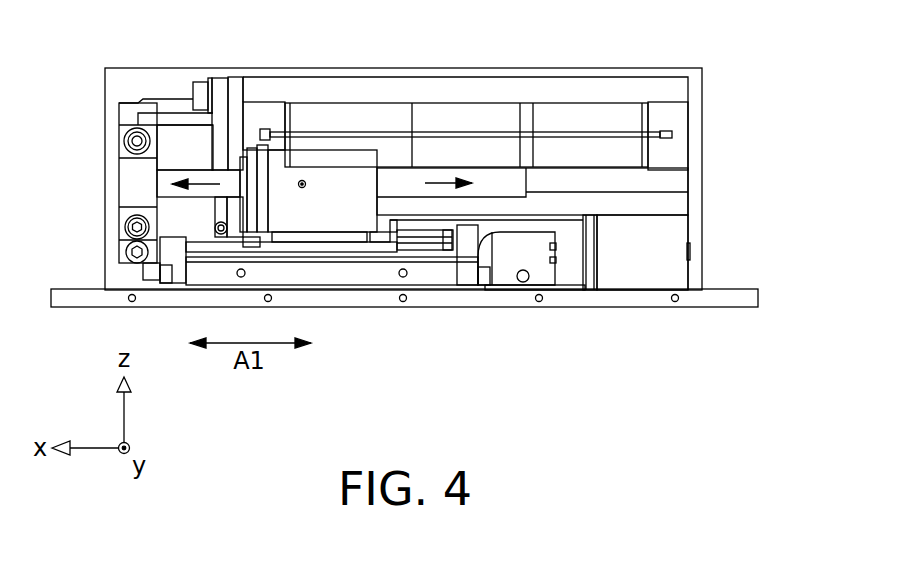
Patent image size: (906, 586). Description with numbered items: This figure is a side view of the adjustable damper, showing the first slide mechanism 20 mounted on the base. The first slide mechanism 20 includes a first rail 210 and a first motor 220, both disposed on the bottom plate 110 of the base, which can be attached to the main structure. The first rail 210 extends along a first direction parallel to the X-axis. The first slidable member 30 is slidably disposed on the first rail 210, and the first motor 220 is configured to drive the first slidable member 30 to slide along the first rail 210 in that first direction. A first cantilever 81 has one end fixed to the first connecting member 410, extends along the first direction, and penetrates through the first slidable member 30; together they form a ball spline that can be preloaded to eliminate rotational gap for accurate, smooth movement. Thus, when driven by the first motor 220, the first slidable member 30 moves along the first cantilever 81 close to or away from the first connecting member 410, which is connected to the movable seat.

The first connecting member 410 is at (137, 183).
The first slidable member 30 is at (339, 201).
The first cantilever 81 is at (487, 180).
The first rail 210 is at (437, 273).
The first motor 220 is at (633, 263).
The first slide mechanism 20 is at (412, 358).
The bottom plate 110 is at (729, 300).